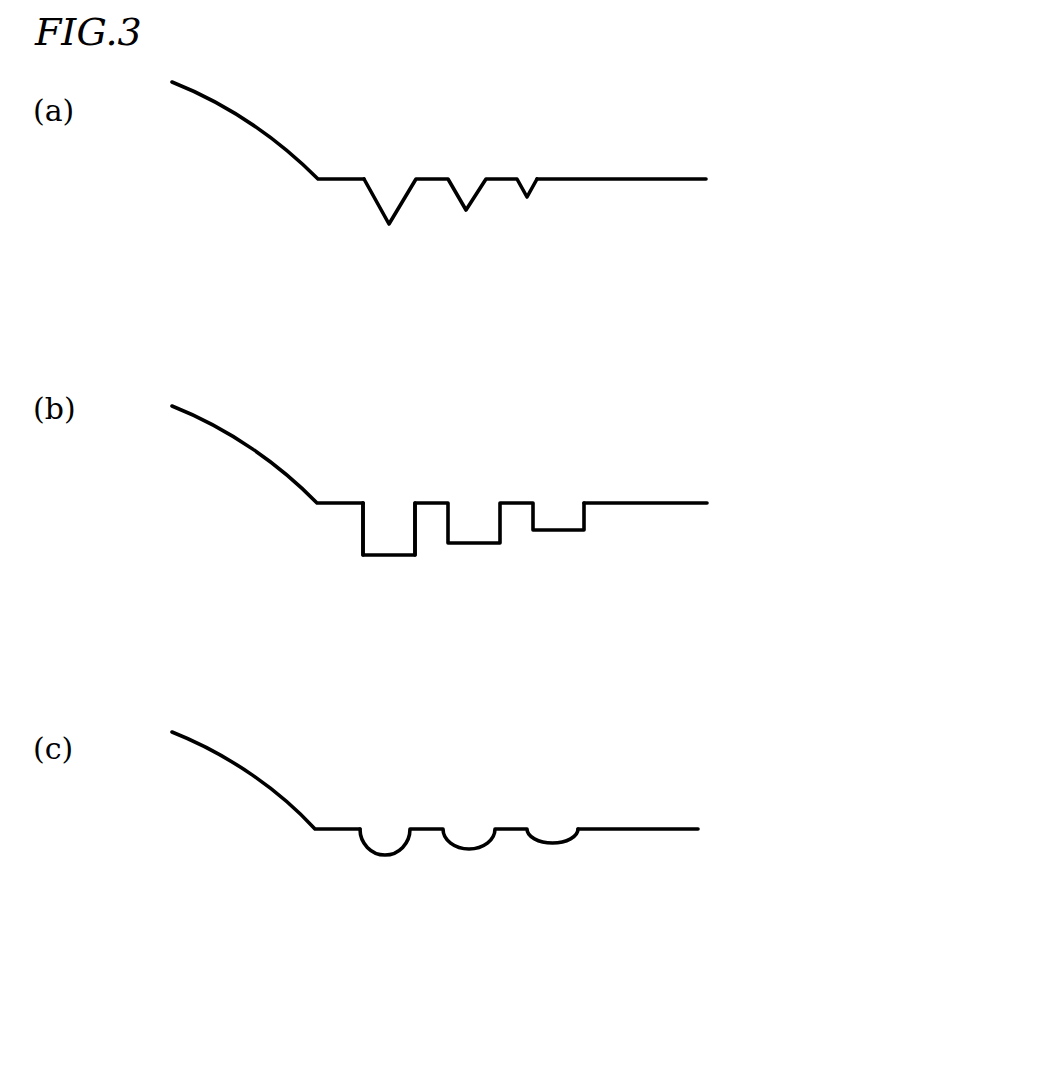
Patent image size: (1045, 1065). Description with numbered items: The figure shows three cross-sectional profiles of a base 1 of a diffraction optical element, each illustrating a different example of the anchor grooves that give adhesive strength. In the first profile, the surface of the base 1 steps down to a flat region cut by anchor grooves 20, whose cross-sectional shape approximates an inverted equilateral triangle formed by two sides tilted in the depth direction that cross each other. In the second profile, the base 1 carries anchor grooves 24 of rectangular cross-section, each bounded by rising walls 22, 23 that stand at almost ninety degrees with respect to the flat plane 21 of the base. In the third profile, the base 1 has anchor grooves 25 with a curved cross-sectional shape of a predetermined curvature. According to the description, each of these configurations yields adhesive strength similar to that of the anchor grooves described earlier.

The base 1 is at (698, 127).
The anchor grooves 20 is at (554, 241).
The flat plane 21 is at (667, 504).
The rising wall 22 is at (363, 493).
The rising wall 23 is at (415, 493).
The anchor grooves 24 is at (340, 578).
The anchor grooves 25 is at (340, 887).